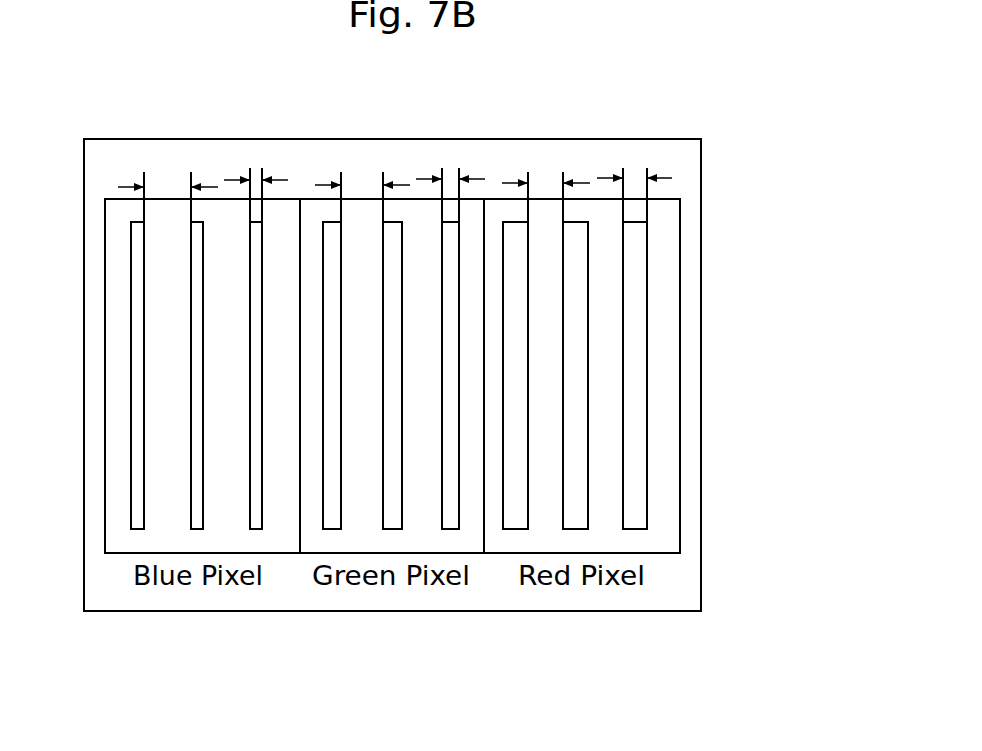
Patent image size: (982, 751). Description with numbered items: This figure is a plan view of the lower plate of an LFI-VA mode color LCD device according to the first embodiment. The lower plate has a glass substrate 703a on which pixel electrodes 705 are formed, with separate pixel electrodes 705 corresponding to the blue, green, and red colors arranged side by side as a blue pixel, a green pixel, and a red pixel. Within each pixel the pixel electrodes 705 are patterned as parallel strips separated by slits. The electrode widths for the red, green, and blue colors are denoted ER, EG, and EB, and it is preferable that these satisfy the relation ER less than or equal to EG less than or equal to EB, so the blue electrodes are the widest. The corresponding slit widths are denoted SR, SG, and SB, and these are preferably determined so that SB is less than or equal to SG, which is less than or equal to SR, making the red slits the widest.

The pixel electrodes 705 is at (663, 332).
The glass substrate 703a is at (690, 438).
The blue pixel electrode width EB is at (168, 187).
The blue slit width SB is at (256, 182).
The green pixel electrode width EG is at (362, 187).
The green slit width SG is at (450, 182).
The red pixel electrode width ER is at (546, 186).
The red slit width SR is at (634, 181).